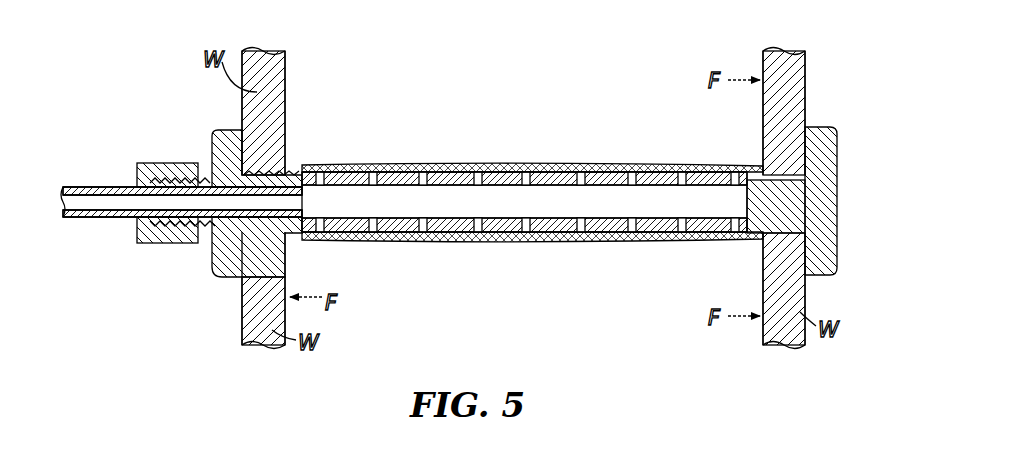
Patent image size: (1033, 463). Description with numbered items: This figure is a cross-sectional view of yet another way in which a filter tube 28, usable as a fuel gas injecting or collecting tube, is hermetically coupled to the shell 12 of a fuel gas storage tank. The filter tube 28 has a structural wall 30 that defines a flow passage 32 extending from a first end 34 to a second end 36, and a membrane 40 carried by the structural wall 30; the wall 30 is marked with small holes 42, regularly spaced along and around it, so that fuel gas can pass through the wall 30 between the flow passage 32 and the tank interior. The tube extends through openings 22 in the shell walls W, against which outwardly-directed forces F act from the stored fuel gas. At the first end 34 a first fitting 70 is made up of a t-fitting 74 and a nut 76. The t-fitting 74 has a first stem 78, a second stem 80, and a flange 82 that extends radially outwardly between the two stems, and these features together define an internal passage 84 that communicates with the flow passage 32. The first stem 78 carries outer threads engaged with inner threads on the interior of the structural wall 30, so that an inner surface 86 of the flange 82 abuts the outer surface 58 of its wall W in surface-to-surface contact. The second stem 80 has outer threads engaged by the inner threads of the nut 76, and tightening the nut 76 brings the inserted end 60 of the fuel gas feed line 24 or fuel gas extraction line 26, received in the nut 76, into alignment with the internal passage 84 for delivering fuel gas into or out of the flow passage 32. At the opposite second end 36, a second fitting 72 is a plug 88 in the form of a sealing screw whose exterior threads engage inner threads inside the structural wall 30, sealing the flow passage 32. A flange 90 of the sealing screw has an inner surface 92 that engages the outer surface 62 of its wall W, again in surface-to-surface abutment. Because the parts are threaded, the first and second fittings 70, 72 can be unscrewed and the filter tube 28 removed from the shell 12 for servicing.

The shell 12 is at (808, 94).
The openings 22 is at (298, 172).
The fuel gas feed line 24 is at (110, 187).
The fuel gas extraction line 26 is at (182, 202).
The filter tube 28 is at (500, 242).
The structural wall 30 is at (396, 233).
The flow passage 32 is at (524, 201).
The first end 34 is at (258, 172).
The second end 36 is at (793, 175).
The membrane 40 is at (656, 165).
The holes 42 is at (630, 170).
The outer surface 58 is at (242, 345).
The inserted end 60 is at (170, 163).
The outer surface 62 is at (806, 303).
The first fitting 70 is at (208, 262).
The second fitting 72 is at (840, 274).
The t-fitting 74 is at (226, 150).
The nut 76 is at (141, 164).
The first stem 78 is at (298, 234).
The second stem 80 is at (164, 233).
The flange 82 is at (230, 255).
The internal passage 84 is at (295, 194).
The inner surface 86 is at (244, 268).
The plug 88 is at (795, 196).
The flange 90 is at (818, 210).
The inner surface 92 is at (798, 264).